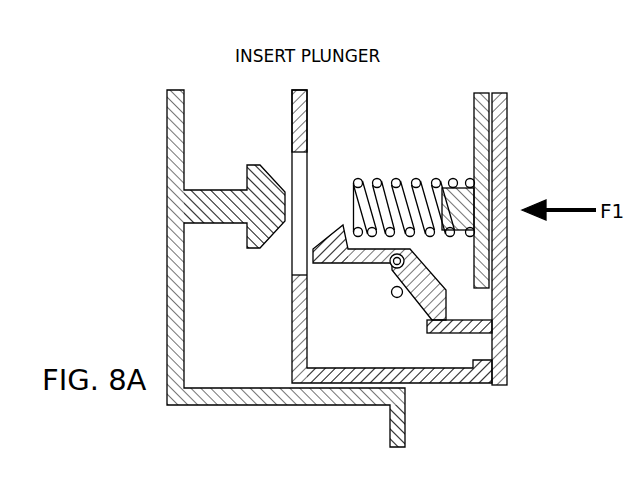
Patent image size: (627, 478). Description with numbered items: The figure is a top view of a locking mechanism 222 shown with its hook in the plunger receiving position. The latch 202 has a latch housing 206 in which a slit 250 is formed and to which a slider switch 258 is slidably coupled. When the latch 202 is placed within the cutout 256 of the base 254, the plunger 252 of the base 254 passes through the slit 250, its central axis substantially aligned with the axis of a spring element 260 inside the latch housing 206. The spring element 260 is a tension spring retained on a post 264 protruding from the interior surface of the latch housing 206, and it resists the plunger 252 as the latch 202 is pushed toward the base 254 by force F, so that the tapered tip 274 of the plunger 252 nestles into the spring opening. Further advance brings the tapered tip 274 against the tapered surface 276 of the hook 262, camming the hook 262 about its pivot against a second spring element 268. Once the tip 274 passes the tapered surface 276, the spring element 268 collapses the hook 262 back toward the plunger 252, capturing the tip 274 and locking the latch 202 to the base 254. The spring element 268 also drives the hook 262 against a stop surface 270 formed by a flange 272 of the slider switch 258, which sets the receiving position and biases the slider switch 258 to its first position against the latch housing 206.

The locking mechanism 222 is at (208, 75).
The latch 202 is at (437, 92).
The plunger 252 is at (212, 190).
The tapered tip 274 is at (277, 170).
The cutout 256 is at (218, 388).
The base 254 is at (405, 430).
The slit 250 is at (307, 165).
The slider switch 258 is at (505, 128).
The spring element 260 is at (392, 182).
The post 264 is at (443, 188).
The tapered surface 276 is at (326, 247).
The hook 262 is at (337, 263).
The spring element 268 is at (393, 296).
The flange 272 is at (474, 333).
The stop surface 270 is at (478, 320).
The latch housing 206 is at (478, 385).